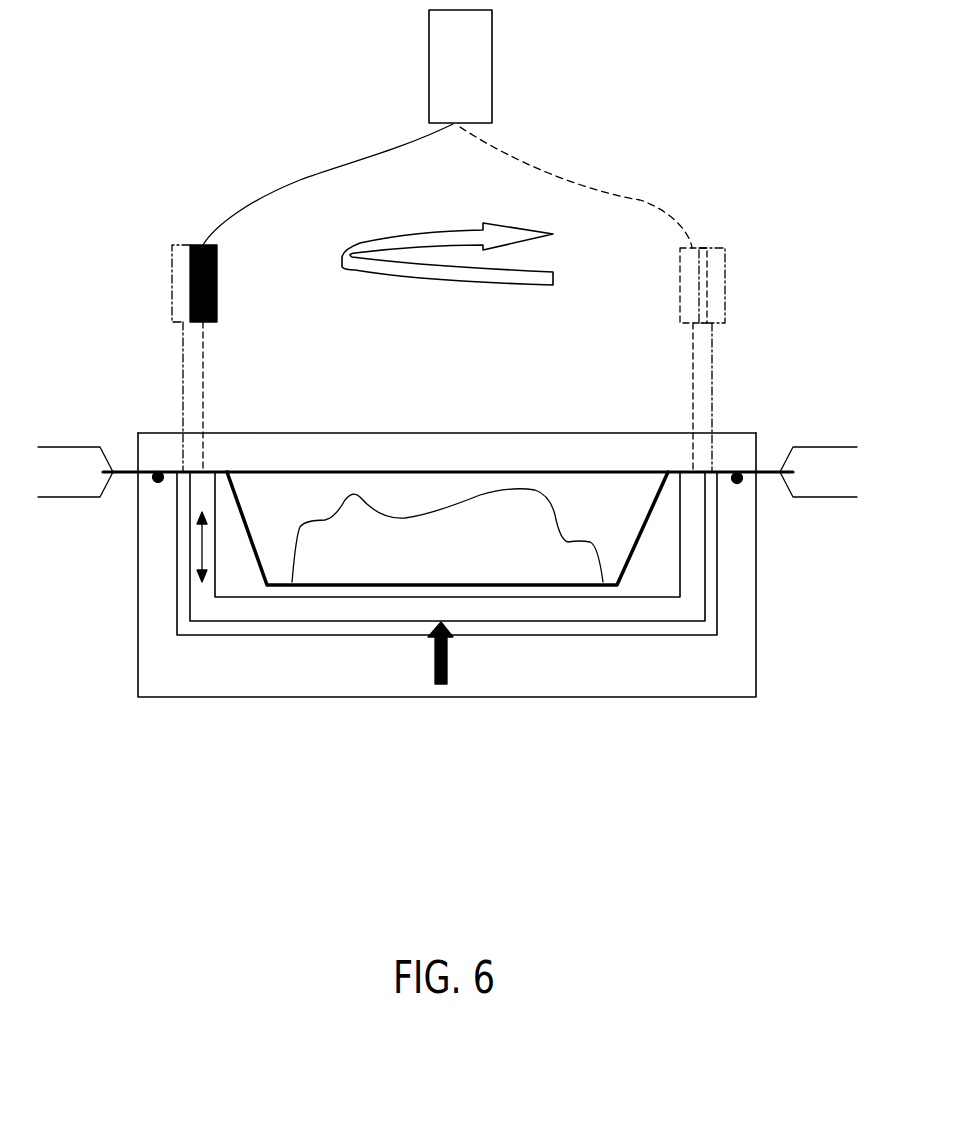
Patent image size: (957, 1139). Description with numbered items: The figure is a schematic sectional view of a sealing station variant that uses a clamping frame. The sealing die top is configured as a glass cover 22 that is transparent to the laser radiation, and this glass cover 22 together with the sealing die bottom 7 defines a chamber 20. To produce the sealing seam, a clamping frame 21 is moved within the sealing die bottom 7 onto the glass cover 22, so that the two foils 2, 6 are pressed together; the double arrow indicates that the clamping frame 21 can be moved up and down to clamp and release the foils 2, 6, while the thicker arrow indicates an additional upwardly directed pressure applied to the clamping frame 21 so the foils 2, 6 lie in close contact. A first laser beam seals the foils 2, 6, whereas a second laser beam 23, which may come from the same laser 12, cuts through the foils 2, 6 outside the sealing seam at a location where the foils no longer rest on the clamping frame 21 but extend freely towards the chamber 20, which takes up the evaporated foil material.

The laser 12 is at (475, 38).
The second laser beam 23 is at (183, 390).
The glass cover 22 is at (630, 452).
The foil 6 is at (762, 472).
The foil 2 is at (760, 478).
The chamber 20 is at (235, 579).
The clamping frame 21 is at (621, 612).
The sealing die bottom 7 is at (381, 687).